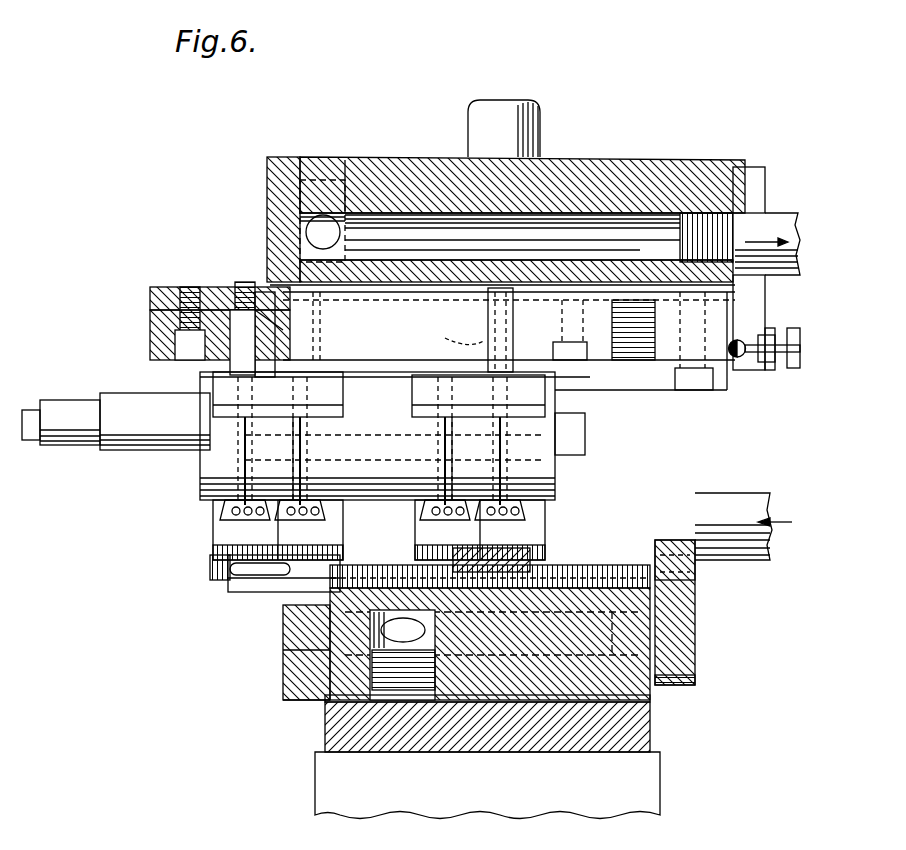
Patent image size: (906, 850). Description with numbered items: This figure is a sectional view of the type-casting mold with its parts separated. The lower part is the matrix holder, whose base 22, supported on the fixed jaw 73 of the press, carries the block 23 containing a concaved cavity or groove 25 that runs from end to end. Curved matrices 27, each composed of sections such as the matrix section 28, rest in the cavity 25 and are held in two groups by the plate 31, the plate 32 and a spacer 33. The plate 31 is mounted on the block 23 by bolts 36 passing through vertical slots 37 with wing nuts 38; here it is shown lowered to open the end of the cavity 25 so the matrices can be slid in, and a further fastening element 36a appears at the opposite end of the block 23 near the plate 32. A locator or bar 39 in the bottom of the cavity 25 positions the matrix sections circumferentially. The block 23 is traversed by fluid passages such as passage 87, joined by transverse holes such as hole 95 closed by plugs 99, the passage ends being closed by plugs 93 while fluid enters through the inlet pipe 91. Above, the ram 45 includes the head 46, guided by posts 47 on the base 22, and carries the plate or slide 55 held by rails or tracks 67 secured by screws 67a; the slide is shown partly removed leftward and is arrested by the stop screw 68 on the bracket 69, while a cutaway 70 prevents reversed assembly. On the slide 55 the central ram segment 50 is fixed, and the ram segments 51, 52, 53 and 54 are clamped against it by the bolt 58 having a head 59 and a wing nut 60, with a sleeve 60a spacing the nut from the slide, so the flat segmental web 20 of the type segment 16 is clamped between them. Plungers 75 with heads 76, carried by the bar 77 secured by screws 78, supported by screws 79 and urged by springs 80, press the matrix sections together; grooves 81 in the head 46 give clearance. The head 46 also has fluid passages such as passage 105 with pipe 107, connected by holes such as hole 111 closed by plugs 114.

The ram 45 is at (222, 205).
The head 46 is at (267, 180).
The posts 47 is at (470, 125).
The plugs 114 is at (347, 190).
The hole 111 is at (341, 236).
The fluid passage 105 is at (578, 228).
The grooves 81 is at (660, 318).
The bracket 69 is at (750, 175).
The pipe 107 is at (775, 222).
The stop screw 68 is at (737, 360).
The rails or tracks 67 is at (632, 385).
The screws 67a is at (315, 318).
The plungers 75 is at (325, 360).
The screws 78 is at (188, 292).
The central ram segment 50 is at (360, 372).
The cutaway 70 is at (400, 360).
The bar 77 is at (152, 300).
The plate or slide 55 is at (152, 335).
The screws 79 is at (247, 292).
The springs 80 is at (256, 342).
The bolt 58 is at (28, 412).
The wing nut 60 is at (72, 405).
The sleeve 60a is at (118, 405).
The ram segment 53 is at (205, 472).
The ram segment 54 is at (548, 495).
The heads 76 is at (222, 386).
The ram segment 51 is at (297, 417).
The ram segment 52 is at (455, 432).
The head 59 is at (587, 440).
The flange or flat segmental web 20 is at (246, 462).
The type segment 16 is at (255, 497).
The curved matrices 27 is at (205, 523).
The matrix section 28 is at (222, 538).
The bolts 36 is at (215, 568).
The wing nuts 38 is at (240, 592).
The locator or bar 39 is at (366, 570).
The spacer 33 is at (453, 560).
The concaved cavity or groove 25 is at (345, 585).
The vertical slots 37 is at (310, 658).
The plate 31 is at (285, 705).
The fluid passage 87 is at (592, 610).
The plugs 99 is at (392, 648).
The hole 95 is at (422, 650).
The block 23 is at (645, 700).
The base 22 is at (650, 740).
The plate 32 is at (690, 622).
The stop 36a is at (698, 565).
The plugs 93 is at (693, 672).
The inlet pipe 91 is at (745, 503).
The fixed jaw 73 is at (330, 790).